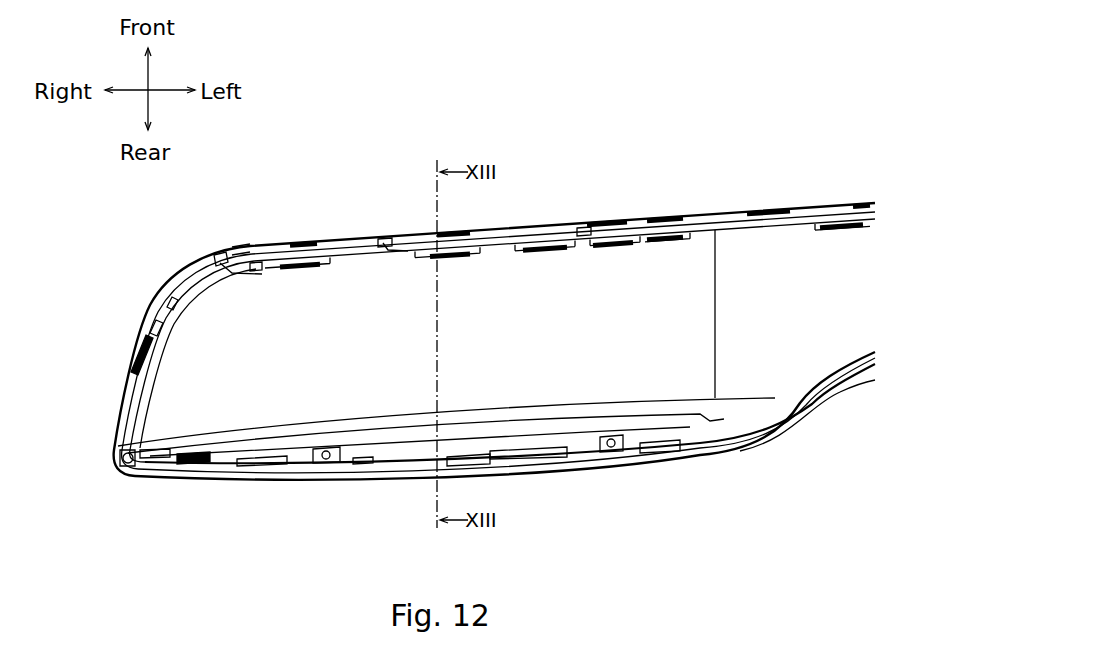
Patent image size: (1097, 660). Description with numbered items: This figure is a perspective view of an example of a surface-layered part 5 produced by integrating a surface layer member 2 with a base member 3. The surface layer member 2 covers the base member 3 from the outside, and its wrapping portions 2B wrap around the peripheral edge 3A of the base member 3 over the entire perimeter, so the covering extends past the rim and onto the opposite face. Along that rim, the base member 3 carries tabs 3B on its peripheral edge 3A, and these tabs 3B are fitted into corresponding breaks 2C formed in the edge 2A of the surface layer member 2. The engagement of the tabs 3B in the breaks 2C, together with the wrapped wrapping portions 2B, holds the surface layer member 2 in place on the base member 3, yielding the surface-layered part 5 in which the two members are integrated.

The surface layer member 2 is at (334, 225).
The edge 2A is at (238, 239).
The wrapping portions 2B is at (253, 263).
The breaks 2C is at (221, 264).
The base member 3 is at (640, 260).
The peripheral edge 3A is at (583, 227).
The tabs 3B is at (217, 253).
The surface-layered part 5 is at (774, 112).